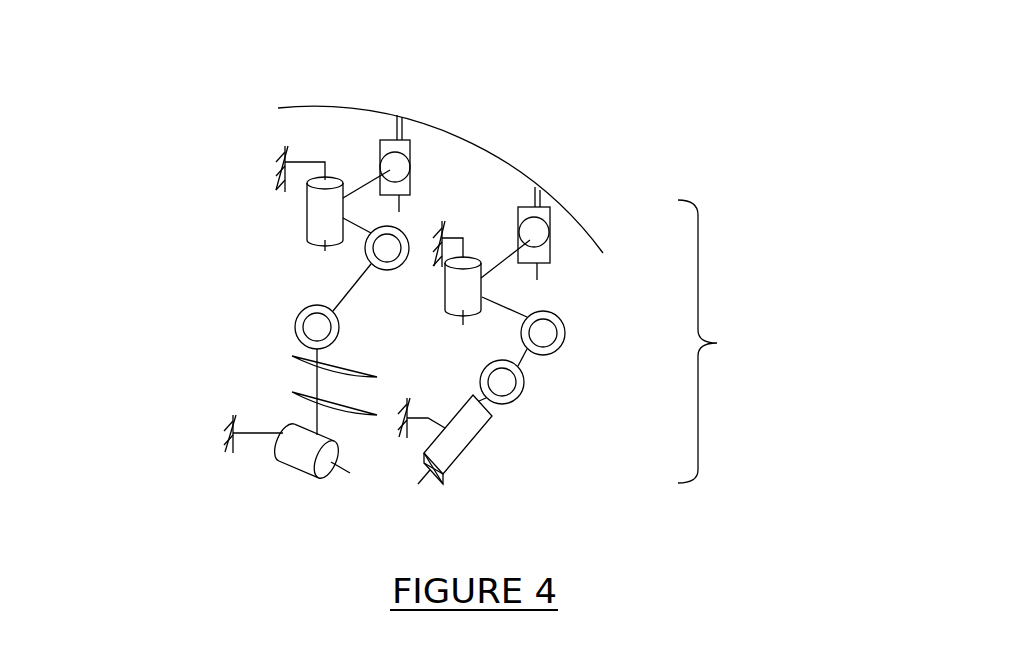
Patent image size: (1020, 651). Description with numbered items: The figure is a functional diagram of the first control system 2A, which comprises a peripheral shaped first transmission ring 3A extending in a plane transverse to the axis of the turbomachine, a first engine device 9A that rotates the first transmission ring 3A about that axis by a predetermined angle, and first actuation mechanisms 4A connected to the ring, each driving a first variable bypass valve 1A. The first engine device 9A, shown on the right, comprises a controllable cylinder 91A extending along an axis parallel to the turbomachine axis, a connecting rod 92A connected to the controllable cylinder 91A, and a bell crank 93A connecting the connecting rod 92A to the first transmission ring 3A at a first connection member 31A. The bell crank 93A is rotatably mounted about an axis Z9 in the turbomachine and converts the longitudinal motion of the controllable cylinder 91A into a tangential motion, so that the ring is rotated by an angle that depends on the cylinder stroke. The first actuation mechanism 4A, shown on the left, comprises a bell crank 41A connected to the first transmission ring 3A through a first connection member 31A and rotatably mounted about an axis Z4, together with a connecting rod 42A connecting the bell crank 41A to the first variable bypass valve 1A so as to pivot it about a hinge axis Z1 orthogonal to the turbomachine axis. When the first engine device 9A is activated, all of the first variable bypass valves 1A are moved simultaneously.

The first variable bypass valve 1A is at (292, 428).
The first control system 2A is at (717, 341).
The first transmission ring 3A is at (347, 108).
The first actuation mechanism 4A is at (297, 137).
The first engine device 9A is at (602, 185).
The first connection member 31A is at (401, 116).
The bell crank 41A is at (307, 217).
The connecting rod 42A is at (343, 293).
The controllable cylinder 91A is at (469, 462).
The connecting rod 92A is at (525, 362).
The bell crank 93A is at (540, 264).
The hinge axis Z1 is at (357, 478).
The axis Z4 is at (320, 260).
The axis Z9 is at (464, 332).